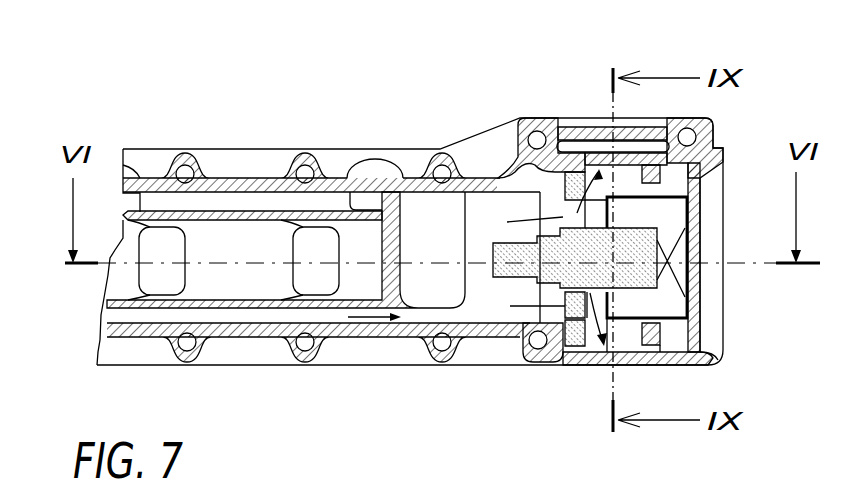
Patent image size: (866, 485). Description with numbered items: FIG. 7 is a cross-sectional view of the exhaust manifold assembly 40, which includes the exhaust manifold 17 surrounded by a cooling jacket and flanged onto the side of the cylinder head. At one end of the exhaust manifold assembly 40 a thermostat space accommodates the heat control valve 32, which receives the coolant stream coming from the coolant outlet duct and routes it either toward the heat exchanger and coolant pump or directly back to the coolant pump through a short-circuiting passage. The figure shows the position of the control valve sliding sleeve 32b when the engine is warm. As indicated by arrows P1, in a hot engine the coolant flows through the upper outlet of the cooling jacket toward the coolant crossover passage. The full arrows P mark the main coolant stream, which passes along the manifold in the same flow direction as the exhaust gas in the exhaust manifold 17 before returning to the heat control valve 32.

The exhaust manifold assembly 40 is at (240, 178).
The exhaust manifold 17 is at (210, 285).
The heat control valve 32 is at (635, 243).
The control valve sliding sleeve 32b is at (710, 360).
The full arrows P is at (377, 320).
The arrows P1 is at (511, 222).